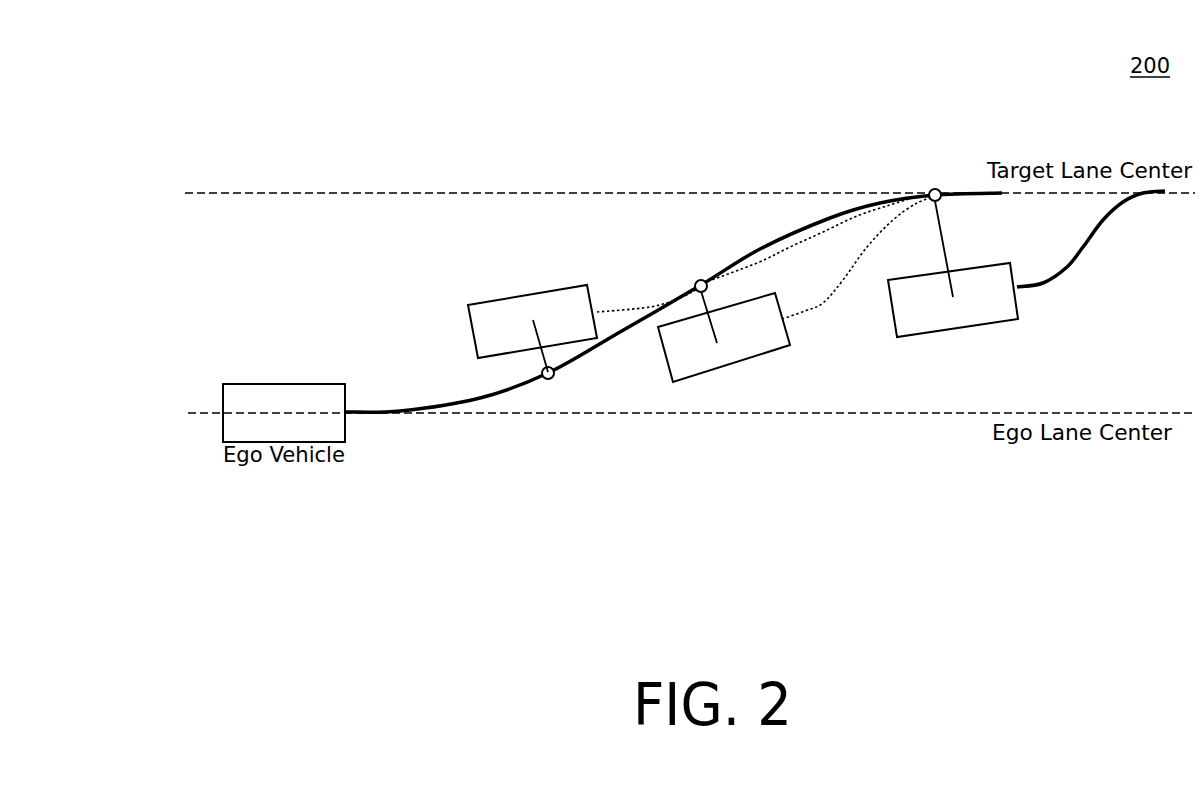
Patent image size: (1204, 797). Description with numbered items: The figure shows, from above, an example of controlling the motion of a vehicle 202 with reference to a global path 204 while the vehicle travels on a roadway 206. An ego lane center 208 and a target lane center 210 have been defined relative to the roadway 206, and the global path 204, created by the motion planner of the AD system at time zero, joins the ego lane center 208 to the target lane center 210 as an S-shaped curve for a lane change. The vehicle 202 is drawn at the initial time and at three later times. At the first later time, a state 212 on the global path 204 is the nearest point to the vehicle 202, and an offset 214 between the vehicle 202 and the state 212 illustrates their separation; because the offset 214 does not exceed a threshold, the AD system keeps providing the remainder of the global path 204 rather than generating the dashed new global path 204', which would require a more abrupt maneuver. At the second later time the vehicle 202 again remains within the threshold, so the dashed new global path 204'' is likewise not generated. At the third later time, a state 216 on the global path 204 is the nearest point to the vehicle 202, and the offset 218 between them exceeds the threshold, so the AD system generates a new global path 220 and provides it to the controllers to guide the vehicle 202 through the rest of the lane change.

The vehicle 202 is at (223, 386).
The global path 204 is at (673, 302).
The new global path 204' is at (766, 253).
The new global path 204'' is at (852, 258).
The roadway 206 is at (1180, 299).
The ego lane center 208 is at (740, 414).
The target lane center 210 is at (643, 193).
The state 212 is at (542, 372).
The offset 214 is at (542, 332).
The state 216 is at (930, 192).
The offset 218 is at (948, 267).
The new global path 220 is at (1083, 244).